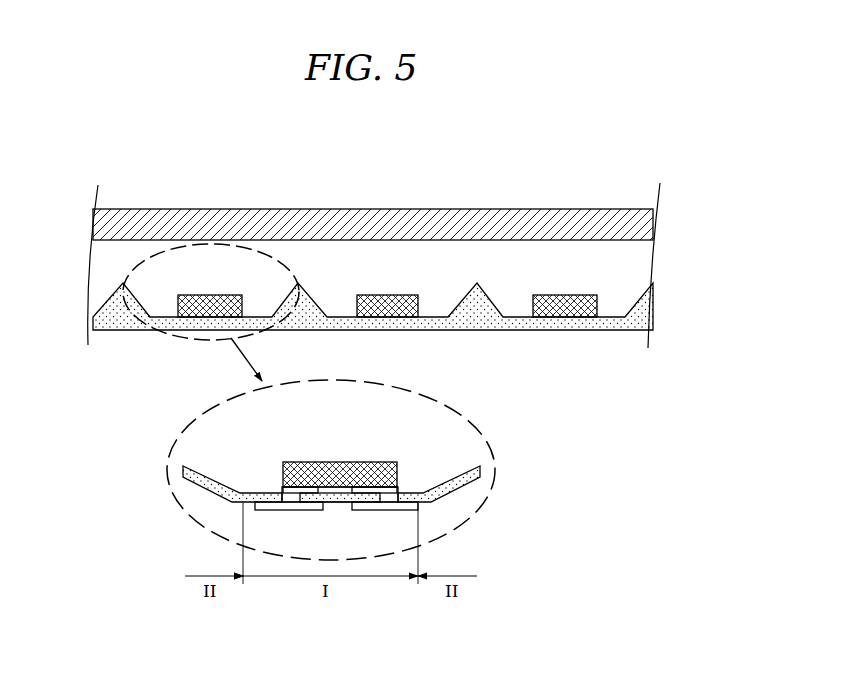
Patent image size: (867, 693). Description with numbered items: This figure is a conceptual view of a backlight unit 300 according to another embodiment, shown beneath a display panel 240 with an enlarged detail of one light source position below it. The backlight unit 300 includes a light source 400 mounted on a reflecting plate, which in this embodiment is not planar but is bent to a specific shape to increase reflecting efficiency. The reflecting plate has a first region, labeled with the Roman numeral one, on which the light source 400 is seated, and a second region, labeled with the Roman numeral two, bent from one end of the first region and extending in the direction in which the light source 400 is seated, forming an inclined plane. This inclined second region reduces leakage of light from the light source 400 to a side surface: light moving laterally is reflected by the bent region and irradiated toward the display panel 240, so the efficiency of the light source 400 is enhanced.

The display panel 240 is at (205, 222).
The backlight unit 300 is at (197, 412).
The light source 400 is at (377, 465).